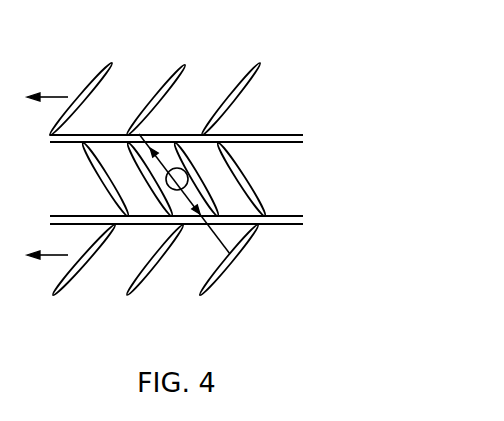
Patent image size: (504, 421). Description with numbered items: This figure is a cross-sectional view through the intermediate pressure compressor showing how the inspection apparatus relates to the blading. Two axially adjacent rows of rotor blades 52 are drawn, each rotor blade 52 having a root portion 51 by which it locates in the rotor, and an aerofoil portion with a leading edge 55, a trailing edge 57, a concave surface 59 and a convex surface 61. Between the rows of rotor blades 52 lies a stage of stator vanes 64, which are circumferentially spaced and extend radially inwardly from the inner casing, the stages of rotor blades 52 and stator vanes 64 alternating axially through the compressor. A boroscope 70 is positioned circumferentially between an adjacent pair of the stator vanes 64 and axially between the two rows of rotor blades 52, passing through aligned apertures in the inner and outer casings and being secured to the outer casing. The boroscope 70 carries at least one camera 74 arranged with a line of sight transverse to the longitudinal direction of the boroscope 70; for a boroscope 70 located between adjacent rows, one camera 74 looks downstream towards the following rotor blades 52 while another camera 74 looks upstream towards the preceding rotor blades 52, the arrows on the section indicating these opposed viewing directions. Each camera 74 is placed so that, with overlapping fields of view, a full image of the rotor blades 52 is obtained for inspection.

The root portion 51 is at (218, 237).
The rotor blades 52 is at (153, 112).
The leading edge 55 is at (258, 62).
The trailing edge 57 is at (205, 134).
The concave surface 59 is at (150, 110).
The convex surface 61 is at (187, 68).
The stator vanes 64 is at (208, 190).
The boroscope 70 is at (165, 180).
The camera 74 is at (160, 176).